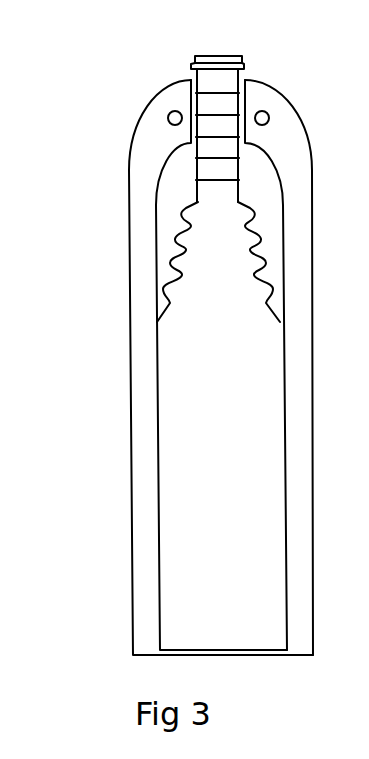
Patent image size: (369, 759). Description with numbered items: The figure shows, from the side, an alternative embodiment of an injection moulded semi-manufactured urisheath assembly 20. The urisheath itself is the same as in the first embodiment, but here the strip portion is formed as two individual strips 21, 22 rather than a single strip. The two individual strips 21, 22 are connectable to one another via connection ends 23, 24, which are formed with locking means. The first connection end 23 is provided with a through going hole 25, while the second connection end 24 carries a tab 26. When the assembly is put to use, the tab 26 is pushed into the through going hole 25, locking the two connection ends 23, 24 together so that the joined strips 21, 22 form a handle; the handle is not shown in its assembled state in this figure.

The urisheath assembly 20 is at (133, 66).
The first individual strip 21 is at (137, 232).
The second individual strip 22 is at (300, 262).
The first connection end 23 is at (198, 101).
The second connection end 24 is at (278, 93).
The through going hole 25 is at (167, 113).
The tab 26 is at (268, 110).